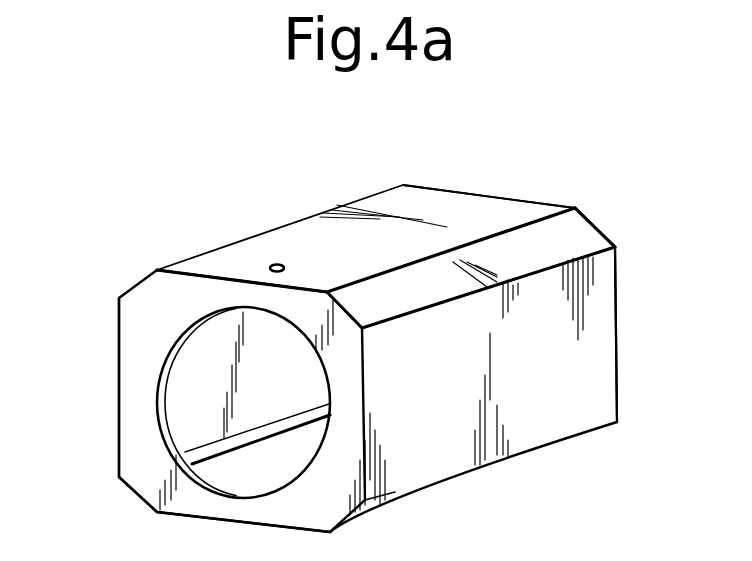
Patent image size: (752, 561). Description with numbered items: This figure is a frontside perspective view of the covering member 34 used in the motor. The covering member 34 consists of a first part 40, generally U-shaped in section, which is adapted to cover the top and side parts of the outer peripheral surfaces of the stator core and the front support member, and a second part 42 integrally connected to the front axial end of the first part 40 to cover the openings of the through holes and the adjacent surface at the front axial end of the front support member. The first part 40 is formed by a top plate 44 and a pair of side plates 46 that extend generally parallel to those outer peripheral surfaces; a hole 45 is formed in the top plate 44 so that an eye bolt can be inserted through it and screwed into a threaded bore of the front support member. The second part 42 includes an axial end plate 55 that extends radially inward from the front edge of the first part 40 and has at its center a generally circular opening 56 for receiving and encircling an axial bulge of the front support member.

The covering member 34 is at (308, 204).
The first part 40 is at (452, 215).
The top plate 44 is at (508, 213).
The side plates 46 is at (592, 348).
The axial end plate 55 is at (138, 342).
The second part 42 is at (140, 463).
The circular opening 56 is at (212, 318).
The hole 45 is at (273, 263).